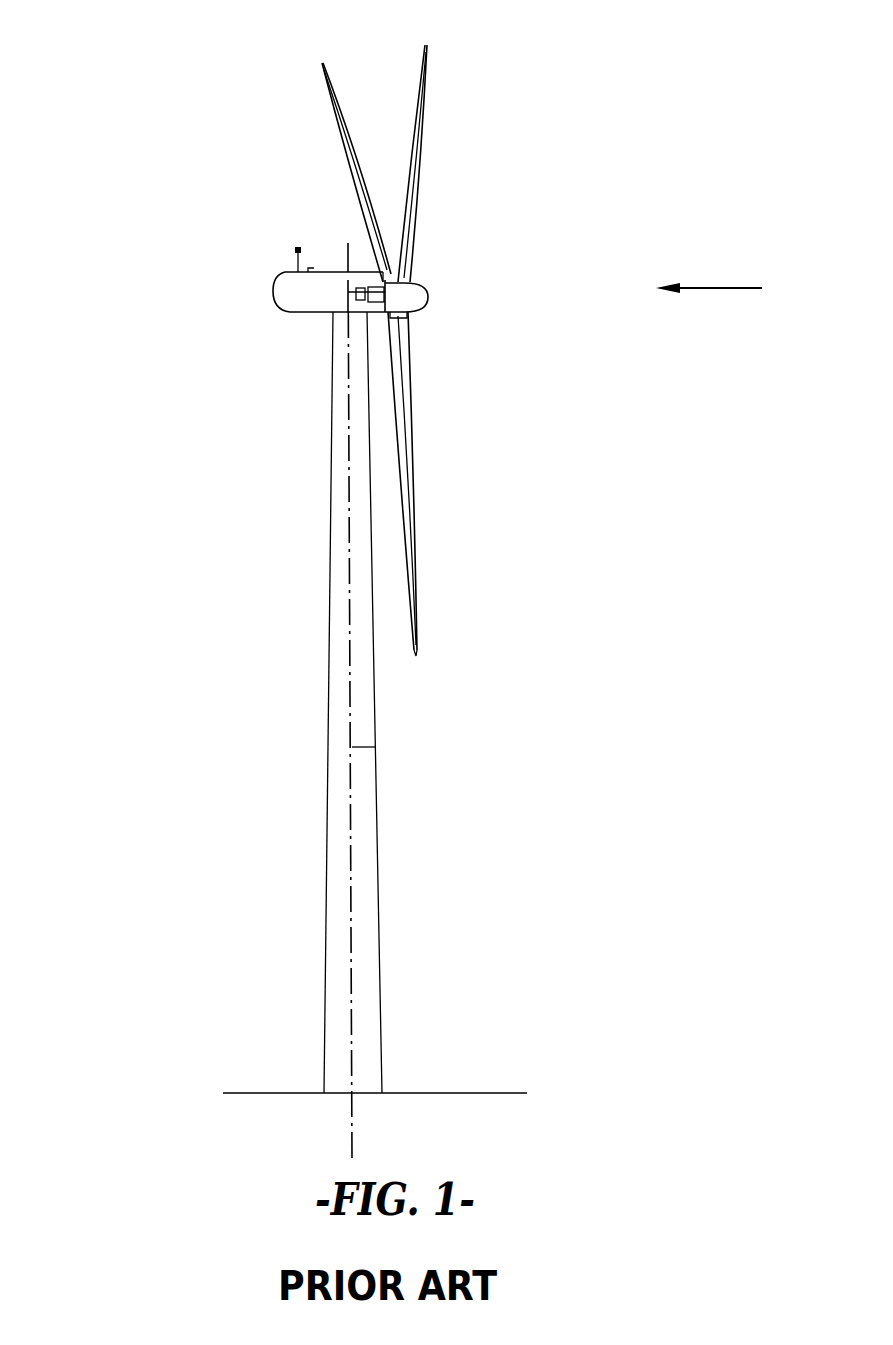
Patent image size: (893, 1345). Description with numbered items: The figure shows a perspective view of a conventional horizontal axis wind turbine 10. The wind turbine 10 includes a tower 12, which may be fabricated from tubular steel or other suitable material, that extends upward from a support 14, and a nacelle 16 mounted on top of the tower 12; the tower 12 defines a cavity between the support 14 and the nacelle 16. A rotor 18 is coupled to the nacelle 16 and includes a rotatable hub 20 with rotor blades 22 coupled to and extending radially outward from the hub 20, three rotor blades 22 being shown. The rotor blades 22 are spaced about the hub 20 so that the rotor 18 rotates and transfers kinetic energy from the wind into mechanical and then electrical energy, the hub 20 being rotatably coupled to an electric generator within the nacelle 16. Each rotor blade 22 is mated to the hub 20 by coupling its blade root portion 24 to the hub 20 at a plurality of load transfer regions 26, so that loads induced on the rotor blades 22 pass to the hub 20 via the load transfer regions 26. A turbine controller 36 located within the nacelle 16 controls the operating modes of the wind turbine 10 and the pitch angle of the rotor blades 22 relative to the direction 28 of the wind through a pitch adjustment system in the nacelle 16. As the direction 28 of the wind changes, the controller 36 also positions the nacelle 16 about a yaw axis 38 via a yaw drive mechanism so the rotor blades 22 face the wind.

The wind turbine 10 is at (102, 72).
The tower 12 is at (327, 858).
The support 14 is at (280, 1093).
The nacelle 16 is at (300, 313).
The rotor 18 is at (434, 191).
The rotatable hub 20 is at (415, 284).
The rotor blades 22 is at (340, 135).
The blade root portion 24 is at (382, 269).
The load transfer regions 26 is at (406, 314).
The direction of the wind 28 is at (727, 286).
The turbine controller 36 is at (345, 347).
The yaw axis 38 is at (352, 747).